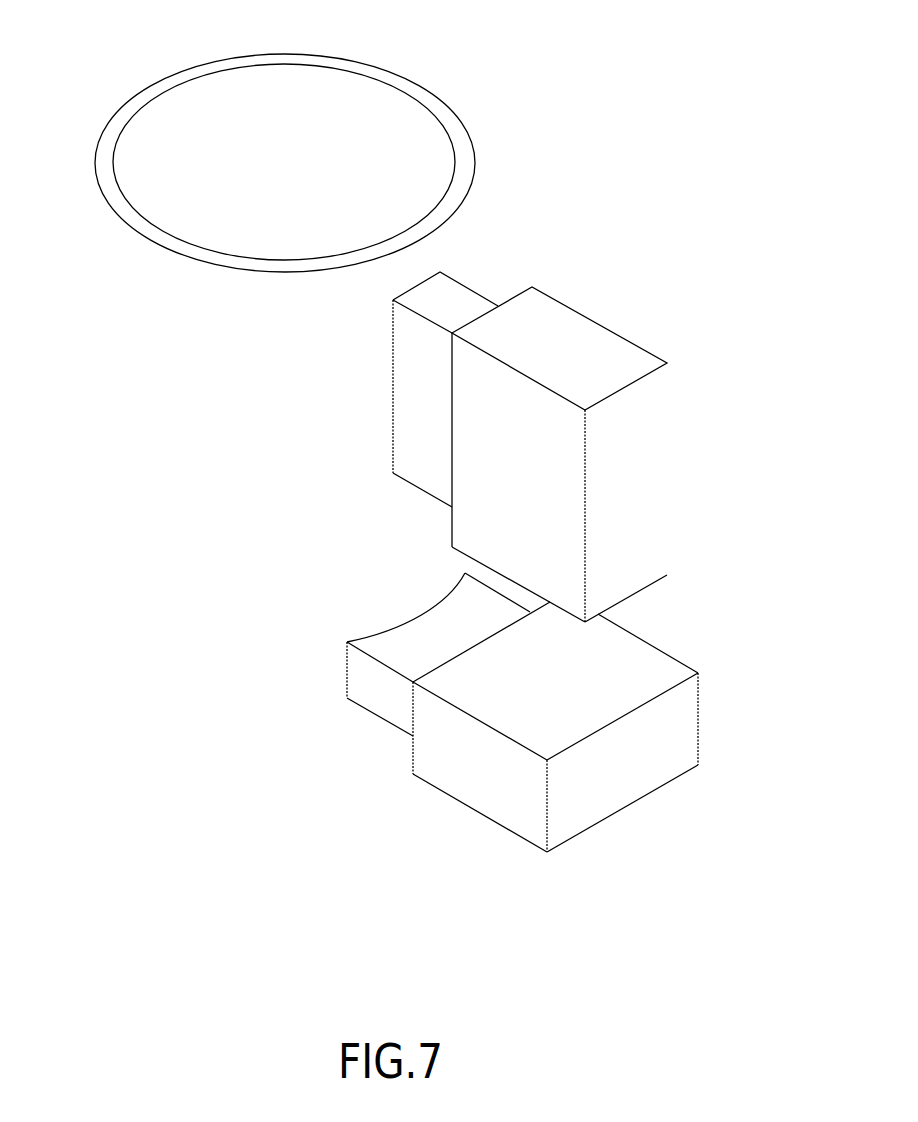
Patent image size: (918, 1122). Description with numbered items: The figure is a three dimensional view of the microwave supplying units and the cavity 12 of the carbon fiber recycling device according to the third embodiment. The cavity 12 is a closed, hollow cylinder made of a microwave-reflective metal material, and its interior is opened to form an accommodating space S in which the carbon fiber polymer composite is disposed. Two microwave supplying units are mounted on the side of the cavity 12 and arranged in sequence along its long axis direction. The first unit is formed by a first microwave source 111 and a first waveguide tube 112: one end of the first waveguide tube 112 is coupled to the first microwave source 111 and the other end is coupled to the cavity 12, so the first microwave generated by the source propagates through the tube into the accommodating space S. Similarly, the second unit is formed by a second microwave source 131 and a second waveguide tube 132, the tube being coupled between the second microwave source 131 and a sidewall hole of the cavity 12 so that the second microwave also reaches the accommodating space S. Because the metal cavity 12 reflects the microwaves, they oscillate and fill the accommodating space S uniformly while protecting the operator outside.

The accommodating space S is at (360, 110).
The cavity 12 is at (448, 127).
The first microwave source 111 is at (593, 343).
The first waveguide tube 112 is at (462, 302).
The second microwave source 131 is at (518, 808).
The second waveguide tube 132 is at (388, 700).